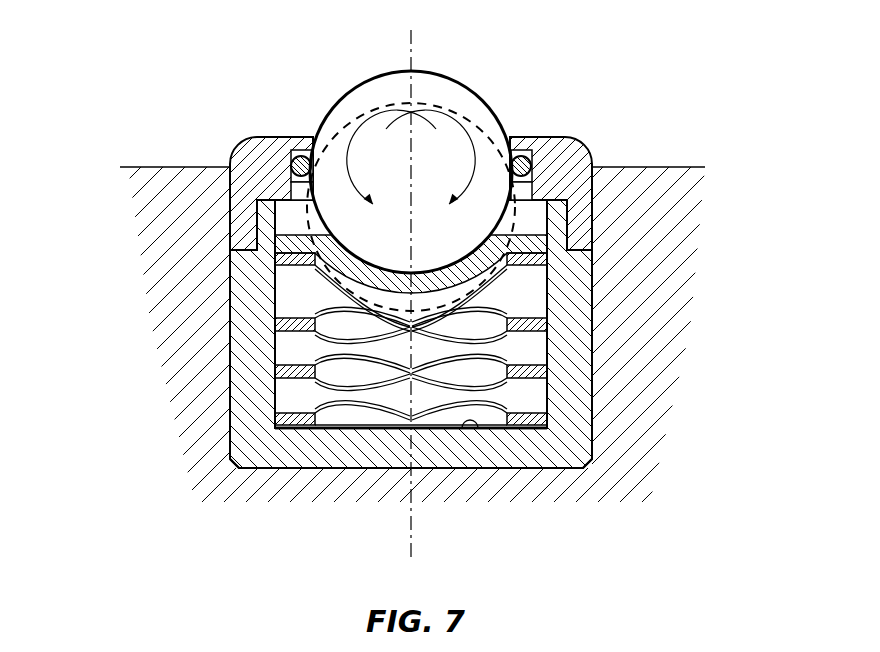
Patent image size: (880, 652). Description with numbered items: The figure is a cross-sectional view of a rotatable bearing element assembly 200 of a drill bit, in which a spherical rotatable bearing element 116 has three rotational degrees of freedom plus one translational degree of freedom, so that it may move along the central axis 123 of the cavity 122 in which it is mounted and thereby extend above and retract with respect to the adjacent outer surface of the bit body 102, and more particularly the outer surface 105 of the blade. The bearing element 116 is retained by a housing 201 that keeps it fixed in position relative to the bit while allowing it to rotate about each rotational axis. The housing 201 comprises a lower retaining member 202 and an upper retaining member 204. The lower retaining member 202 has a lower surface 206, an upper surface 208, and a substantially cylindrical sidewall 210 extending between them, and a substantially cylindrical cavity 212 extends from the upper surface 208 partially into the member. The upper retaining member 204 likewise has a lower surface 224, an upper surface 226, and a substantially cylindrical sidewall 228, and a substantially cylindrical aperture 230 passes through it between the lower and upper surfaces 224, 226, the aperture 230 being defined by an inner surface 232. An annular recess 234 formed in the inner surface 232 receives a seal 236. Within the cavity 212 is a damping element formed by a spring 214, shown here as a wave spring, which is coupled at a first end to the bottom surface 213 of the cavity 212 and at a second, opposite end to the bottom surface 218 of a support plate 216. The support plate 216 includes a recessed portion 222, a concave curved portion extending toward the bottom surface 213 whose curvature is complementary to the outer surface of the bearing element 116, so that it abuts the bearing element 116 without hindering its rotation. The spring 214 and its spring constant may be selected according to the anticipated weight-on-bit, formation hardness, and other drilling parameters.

The rotatable bearing element assembly 200 is at (416, 279).
The outer surface of the blade 105 is at (150, 166).
The seal 236 is at (292, 158).
The rotatable bearing element 116 is at (486, 87).
The annular recess 234 is at (534, 148).
The upper surface of the upper retaining member 226 is at (416, 155).
The aperture 230 is at (532, 189).
The inner surface of the upper retaining member 232 is at (308, 203).
The sidewall of the upper retaining member 228 is at (593, 192).
The bit body 102 is at (675, 233).
The housing 201 is at (172, 234).
The upper retaining member 204 is at (549, 238).
The upper surface of the lower retaining member 208 is at (400, 272).
The lower surface of the upper retaining member 224 is at (549, 262).
The recessed portion 222 is at (370, 300).
The support plate 216 is at (549, 293).
The bottom surface of the support plate 218 is at (312, 325).
The cavity 212 is at (497, 407).
The sidewall of the lower retaining member 210 is at (235, 410).
The lower retaining member 202 is at (577, 406).
The lower surface of the lower retaining member 206 is at (262, 468).
The cavity 122 is at (592, 452).
The spring 214 is at (357, 422).
The bottom surface of the cavity 213 is at (470, 430).
The central axis 123 is at (411, 548).